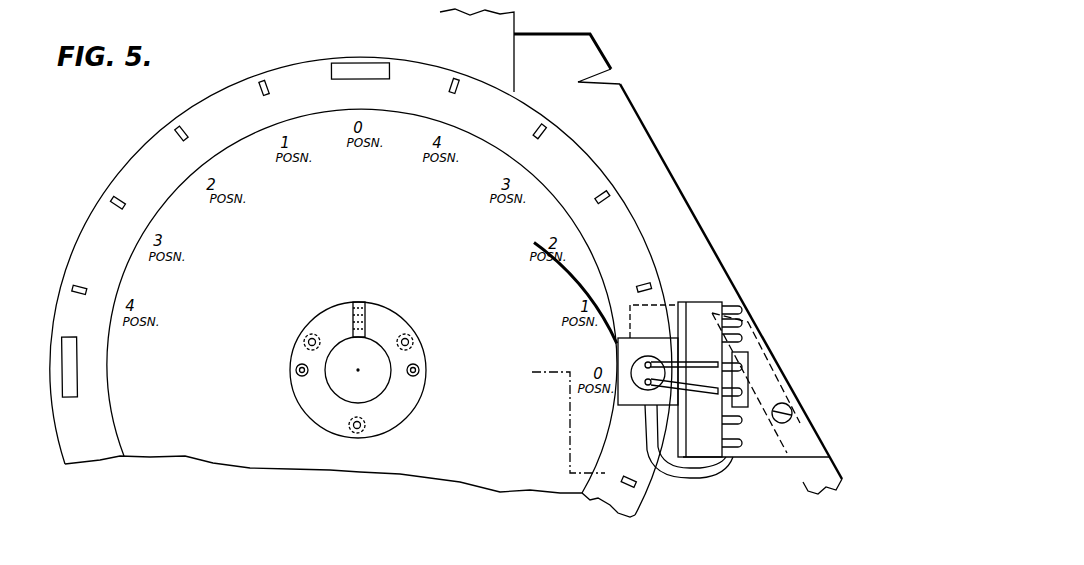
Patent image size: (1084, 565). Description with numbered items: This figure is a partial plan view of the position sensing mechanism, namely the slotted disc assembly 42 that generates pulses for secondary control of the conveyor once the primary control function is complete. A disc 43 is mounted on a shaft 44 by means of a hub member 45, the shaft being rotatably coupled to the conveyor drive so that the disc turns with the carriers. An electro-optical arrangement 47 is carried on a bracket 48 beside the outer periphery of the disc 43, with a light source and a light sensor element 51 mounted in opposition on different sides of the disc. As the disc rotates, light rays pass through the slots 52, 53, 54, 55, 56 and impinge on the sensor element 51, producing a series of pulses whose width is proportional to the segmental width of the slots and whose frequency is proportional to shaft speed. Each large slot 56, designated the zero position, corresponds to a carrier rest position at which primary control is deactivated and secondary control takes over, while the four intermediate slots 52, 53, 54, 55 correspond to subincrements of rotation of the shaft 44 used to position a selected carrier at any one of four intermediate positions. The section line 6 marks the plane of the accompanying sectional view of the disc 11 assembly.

The section line 6- 6 is at (60, 365).
The dial disc 11 is at (361, 294).
The slotted disc assembly 42 is at (668, 220).
The disc 43 is at (536, 472).
The shaft 44 is at (348, 388).
The hub member 45 is at (385, 408).
The electro-optical arrangement 47 is at (713, 293).
The bracket 48 is at (768, 452).
The light sensor element 51 is at (636, 395).
The slot 52 is at (646, 289).
The slot 53 is at (601, 205).
The slot 54 is at (541, 130).
The slot 55 is at (459, 88).
The large slot 56 is at (371, 73).